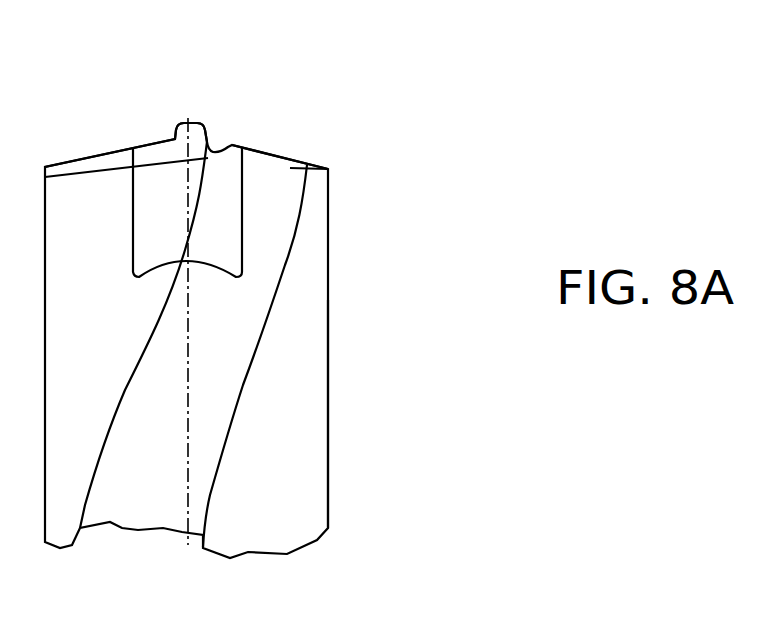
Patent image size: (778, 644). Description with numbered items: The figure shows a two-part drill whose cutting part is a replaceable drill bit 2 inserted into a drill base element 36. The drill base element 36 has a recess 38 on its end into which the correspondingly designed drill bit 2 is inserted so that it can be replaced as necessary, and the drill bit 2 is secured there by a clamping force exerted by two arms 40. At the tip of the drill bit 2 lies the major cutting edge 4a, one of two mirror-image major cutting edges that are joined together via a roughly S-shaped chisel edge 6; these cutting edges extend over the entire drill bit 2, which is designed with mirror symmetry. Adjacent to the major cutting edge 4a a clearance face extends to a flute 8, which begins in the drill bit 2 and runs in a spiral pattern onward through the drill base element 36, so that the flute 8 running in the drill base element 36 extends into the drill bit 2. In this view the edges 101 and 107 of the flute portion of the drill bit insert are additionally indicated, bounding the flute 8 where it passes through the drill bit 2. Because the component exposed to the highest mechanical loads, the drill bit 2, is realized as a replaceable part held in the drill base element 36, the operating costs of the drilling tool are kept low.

The drill bit 2 is at (268, 153).
The major cutting edge 4a is at (293, 158).
The chisel edge 6 is at (183, 122).
The flute 8 is at (225, 188).
The drill base element 36 is at (297, 440).
The recess 38 is at (150, 273).
The arms 40 is at (77, 197).
The edge of the flute portion 101 is at (199, 216).
The edge of the flute portion 107 is at (241, 250).